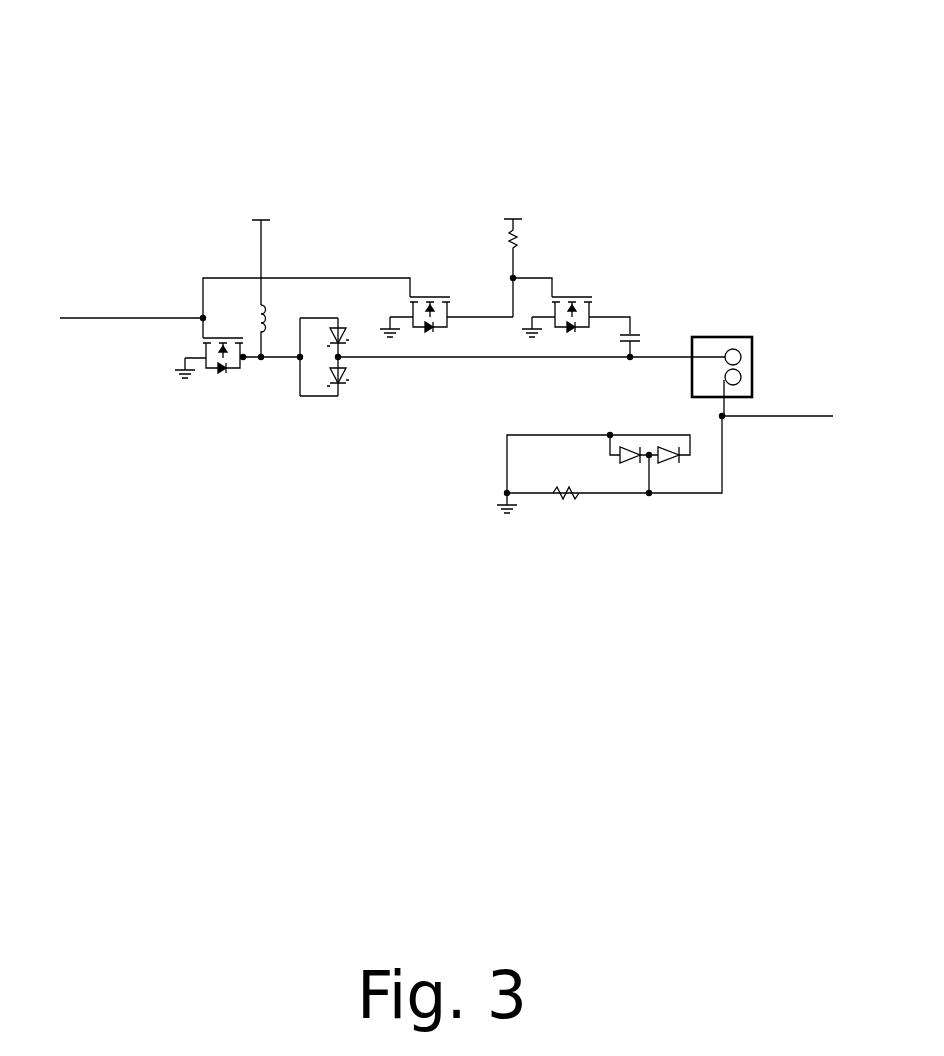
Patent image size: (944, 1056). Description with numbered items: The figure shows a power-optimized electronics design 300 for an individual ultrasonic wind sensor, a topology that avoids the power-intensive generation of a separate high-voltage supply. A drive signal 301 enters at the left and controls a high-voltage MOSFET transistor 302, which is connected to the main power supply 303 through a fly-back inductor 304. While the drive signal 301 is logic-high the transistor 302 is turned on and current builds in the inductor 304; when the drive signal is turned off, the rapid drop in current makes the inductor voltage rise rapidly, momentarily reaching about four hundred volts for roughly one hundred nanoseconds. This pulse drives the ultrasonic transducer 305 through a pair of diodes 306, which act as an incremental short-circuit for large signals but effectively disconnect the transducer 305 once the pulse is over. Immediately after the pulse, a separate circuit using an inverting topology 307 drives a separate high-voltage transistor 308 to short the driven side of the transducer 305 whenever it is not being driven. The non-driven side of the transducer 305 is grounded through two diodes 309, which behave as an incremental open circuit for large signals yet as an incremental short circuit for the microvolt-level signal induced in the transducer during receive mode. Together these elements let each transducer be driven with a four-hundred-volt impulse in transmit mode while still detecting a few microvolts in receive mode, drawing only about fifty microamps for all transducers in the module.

The power-optimized electronics design 300 is at (400, 108).
The drive signal 301 is at (148, 290).
The high-voltage MOSFET transistor 302 is at (235, 380).
The main power supply 303 is at (236, 196).
The fly-back inductor 304 is at (247, 308).
The ultrasonic transducer 305 is at (712, 322).
The pair of diodes 306 is at (363, 388).
The inverting topology 307 is at (437, 278).
The separate high-voltage transistor 308 is at (587, 278).
The two diodes 309 is at (700, 463).